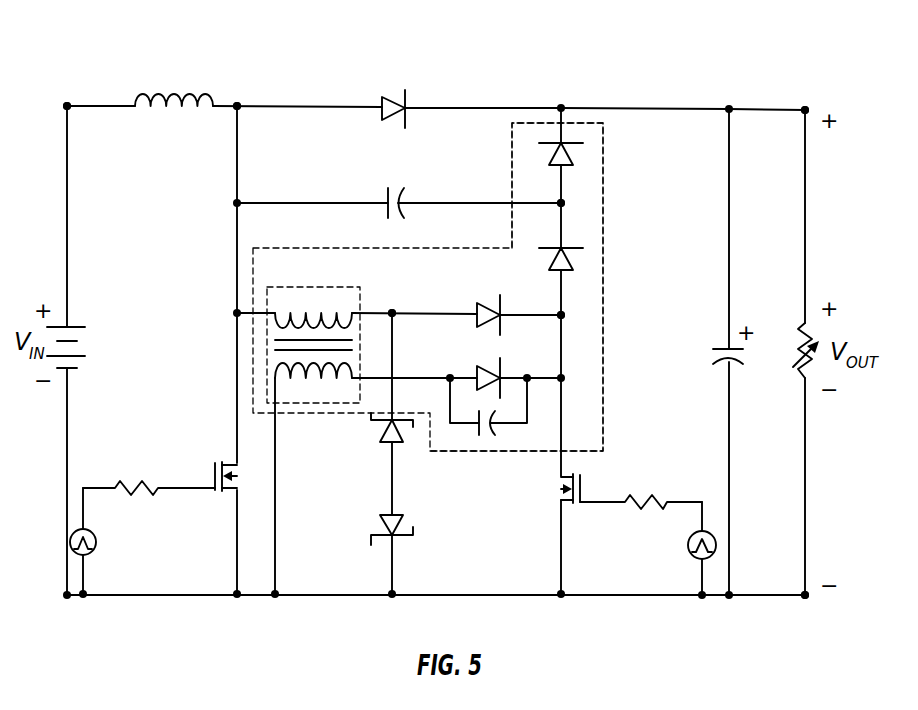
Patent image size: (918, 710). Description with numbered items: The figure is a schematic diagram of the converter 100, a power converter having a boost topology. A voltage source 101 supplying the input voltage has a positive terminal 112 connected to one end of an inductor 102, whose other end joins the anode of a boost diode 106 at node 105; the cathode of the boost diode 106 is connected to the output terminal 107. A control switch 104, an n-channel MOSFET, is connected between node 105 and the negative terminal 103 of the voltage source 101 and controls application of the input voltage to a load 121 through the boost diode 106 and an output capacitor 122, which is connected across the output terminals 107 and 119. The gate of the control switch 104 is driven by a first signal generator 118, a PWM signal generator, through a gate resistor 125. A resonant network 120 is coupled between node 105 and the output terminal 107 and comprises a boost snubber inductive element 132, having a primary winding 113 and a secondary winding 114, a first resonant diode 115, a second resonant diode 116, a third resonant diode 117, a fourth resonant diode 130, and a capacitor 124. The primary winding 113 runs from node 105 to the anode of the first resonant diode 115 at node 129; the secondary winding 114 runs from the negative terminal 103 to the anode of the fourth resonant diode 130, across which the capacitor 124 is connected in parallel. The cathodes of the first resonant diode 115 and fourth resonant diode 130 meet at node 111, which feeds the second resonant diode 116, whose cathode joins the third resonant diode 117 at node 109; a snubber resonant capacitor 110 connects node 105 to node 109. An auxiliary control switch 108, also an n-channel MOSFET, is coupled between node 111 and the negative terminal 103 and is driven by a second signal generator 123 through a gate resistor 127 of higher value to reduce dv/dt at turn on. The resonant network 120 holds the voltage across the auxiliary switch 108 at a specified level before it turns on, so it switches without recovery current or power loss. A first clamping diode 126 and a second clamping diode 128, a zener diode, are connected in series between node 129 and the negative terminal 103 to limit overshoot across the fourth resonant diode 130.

The converter 100 is at (606, 62).
The voltage source 101 is at (78, 325).
The inductor 102 is at (180, 93).
The negative terminal 103 is at (67, 595).
The control switch 104 is at (232, 462).
The node 105 is at (237, 106).
The boost diode 106 is at (407, 93).
The output terminal 107 is at (805, 110).
The auxiliary control switch 108 is at (565, 505).
The node 109 is at (565, 206).
The snubber resonant capacitor 110 is at (386, 200).
The node 111 is at (565, 318).
The positive terminal 112 is at (67, 106).
The primary winding 113 is at (335, 320).
The secondary winding 114 is at (290, 370).
The first resonant diode 115 is at (490, 305).
The second resonant diode 116 is at (575, 262).
The third resonant diode 117 is at (575, 155).
The first signal generator 118 is at (97, 546).
The output terminal 119 is at (805, 595).
The resonant network 120 is at (605, 155).
The load 121 is at (797, 375).
The output capacitor 122 is at (727, 345).
The second signal generator 123 is at (688, 549).
The capacitor 124 is at (469, 428).
The gate resistor 125 is at (130, 483).
The first clamping diode 126 is at (383, 436).
The gate resistor 127 is at (655, 497).
The second clamping diode 128 is at (380, 522).
The node 129 is at (392, 309).
The fourth resonant diode 130 is at (490, 368).
The boost snubber inductive element 132 is at (326, 283).